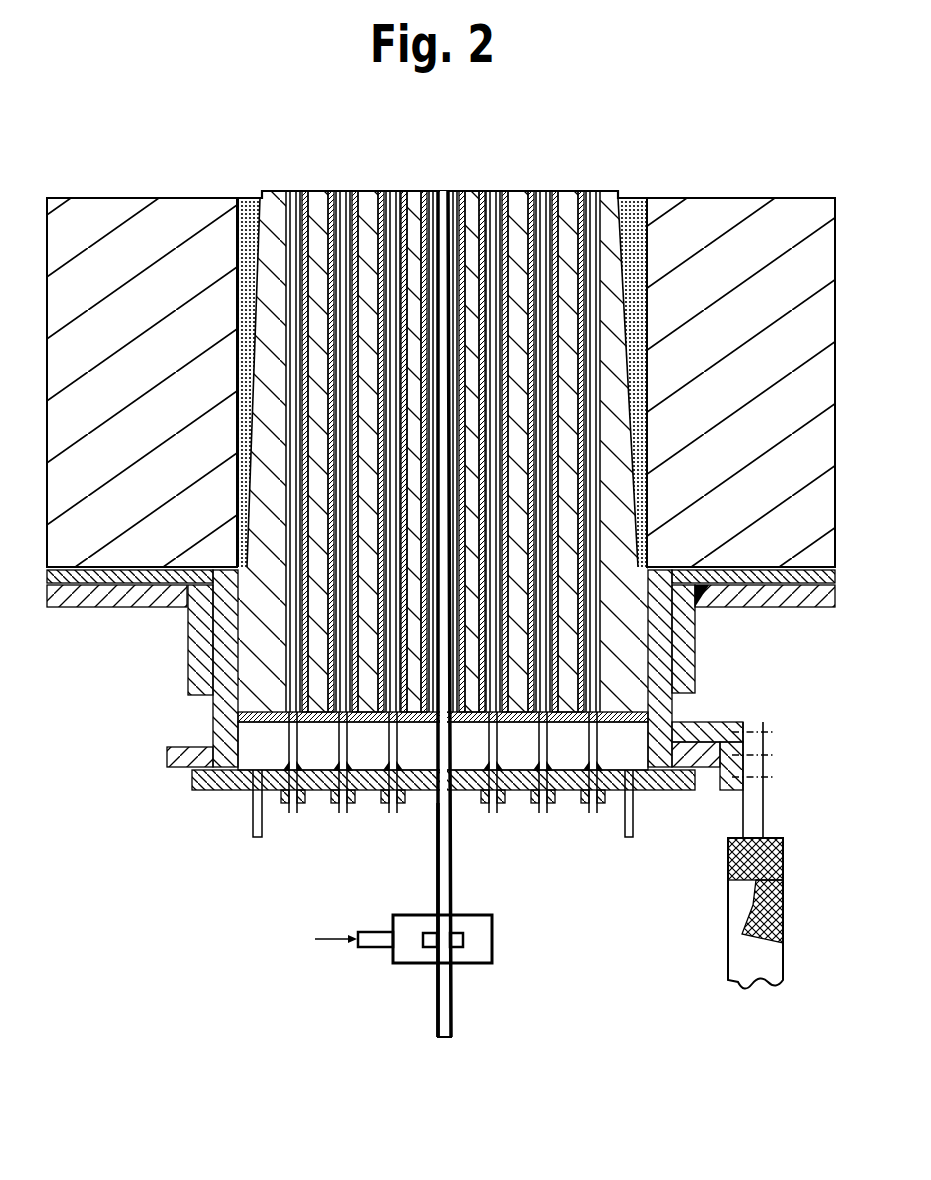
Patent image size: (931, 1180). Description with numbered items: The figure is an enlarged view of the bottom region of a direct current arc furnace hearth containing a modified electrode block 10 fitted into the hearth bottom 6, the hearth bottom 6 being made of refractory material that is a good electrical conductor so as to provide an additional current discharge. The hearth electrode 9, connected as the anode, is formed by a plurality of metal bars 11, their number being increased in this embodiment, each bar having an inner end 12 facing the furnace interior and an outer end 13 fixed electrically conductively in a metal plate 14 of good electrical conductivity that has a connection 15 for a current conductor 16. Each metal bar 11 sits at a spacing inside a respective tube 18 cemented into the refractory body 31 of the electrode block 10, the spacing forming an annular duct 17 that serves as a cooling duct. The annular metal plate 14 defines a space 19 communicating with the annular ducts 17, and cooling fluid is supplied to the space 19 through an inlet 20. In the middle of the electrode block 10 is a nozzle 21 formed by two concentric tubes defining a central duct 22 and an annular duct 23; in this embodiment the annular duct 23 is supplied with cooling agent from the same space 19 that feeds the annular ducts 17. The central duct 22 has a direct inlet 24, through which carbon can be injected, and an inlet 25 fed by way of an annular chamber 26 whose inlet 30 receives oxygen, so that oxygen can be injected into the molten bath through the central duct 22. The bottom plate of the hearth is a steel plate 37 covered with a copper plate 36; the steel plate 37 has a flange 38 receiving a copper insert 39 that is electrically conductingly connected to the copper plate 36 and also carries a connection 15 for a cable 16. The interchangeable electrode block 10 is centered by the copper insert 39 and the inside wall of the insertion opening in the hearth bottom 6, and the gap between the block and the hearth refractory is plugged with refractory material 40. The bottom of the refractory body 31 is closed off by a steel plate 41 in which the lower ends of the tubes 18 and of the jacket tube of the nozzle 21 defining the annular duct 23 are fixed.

The hearth bottom 6 is at (773, 223).
The hearth electrode 9 is at (497, 184).
The electrode block 10 is at (256, 220).
The metal bars 11 is at (645, 220).
The inner ends 12 is at (588, 190).
The outer ends 13 is at (543, 752).
The metal plate 14 is at (192, 793).
The connection 15 is at (768, 768).
The current conductor 16 is at (783, 867).
The annular duct 17 is at (288, 190).
The tube 18 is at (267, 190).
The space 19 is at (255, 752).
The inlet 20 is at (257, 838).
The nozzle 21 is at (450, 184).
The central duct 22 is at (445, 873).
The annular duct 23 is at (427, 197).
The direct inlet 24 is at (447, 1038).
The inlet 25 is at (465, 937).
The annular chamber 26 is at (412, 952).
The inlet 30 is at (377, 930).
The refractory body 31 is at (362, 197).
The copper plate 36 is at (808, 607).
The steel plate 37 is at (758, 598).
The flange 38 is at (687, 655).
The copper insert 39 is at (675, 705).
The refractory material 40 is at (628, 202).
The steel plate 41 is at (240, 723).